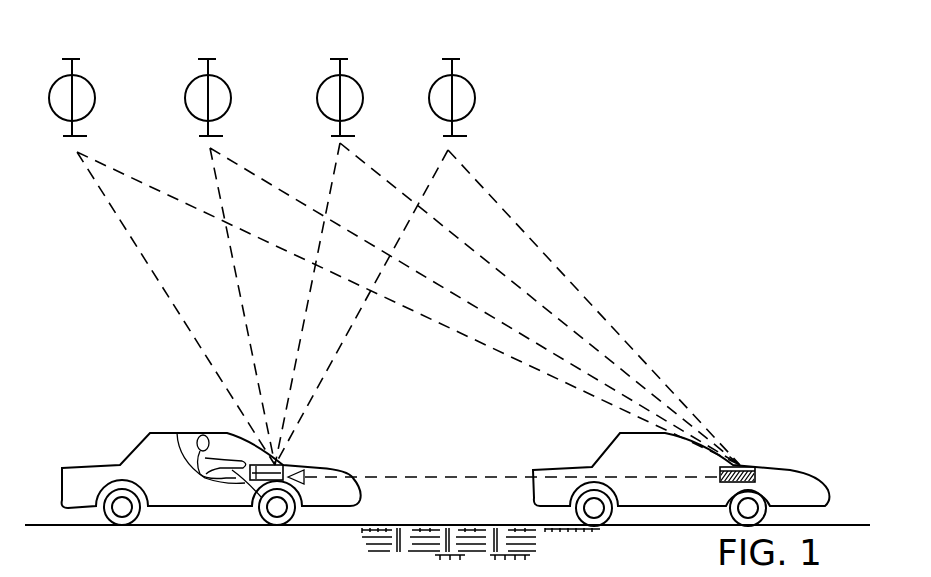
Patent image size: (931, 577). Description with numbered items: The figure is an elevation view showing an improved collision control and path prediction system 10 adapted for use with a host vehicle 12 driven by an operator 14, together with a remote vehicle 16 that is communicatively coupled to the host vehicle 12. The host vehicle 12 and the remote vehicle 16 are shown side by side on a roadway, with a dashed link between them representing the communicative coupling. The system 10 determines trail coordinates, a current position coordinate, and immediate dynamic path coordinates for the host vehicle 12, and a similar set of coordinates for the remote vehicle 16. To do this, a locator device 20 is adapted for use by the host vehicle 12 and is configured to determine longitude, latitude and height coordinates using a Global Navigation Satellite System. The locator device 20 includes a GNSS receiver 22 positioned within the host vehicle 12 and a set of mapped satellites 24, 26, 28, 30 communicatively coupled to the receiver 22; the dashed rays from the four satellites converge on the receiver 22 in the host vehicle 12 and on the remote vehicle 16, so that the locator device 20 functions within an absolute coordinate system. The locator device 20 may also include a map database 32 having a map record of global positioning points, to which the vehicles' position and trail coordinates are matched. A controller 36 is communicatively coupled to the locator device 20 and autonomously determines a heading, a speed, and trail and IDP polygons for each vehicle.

The collision control and path prediction system 10 is at (724, 232).
The host vehicle 12 is at (118, 463).
The operator 14 is at (190, 455).
The remote vehicle 16 is at (780, 468).
The locator device 20 is at (88, 243).
The GNSS receiver 22 is at (283, 465).
The mapped satellite 24 is at (90, 83).
The mapped satellite 26 is at (226, 83).
The mapped satellite 28 is at (358, 83).
The mapped satellite 30 is at (470, 83).
The map database 32 is at (290, 470).
The controller 36 is at (306, 475).